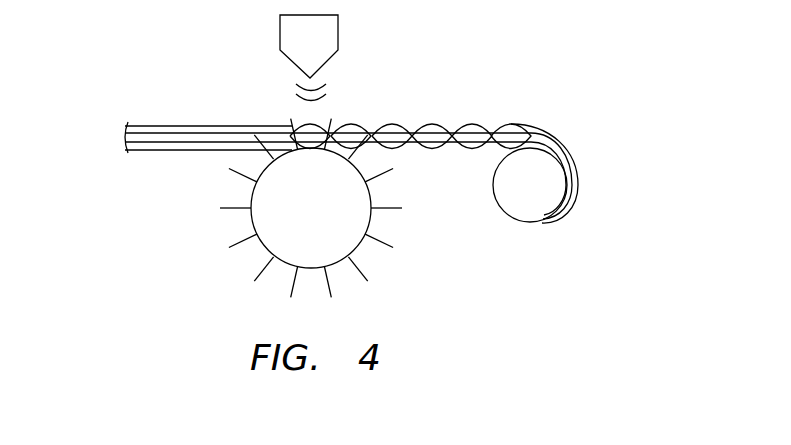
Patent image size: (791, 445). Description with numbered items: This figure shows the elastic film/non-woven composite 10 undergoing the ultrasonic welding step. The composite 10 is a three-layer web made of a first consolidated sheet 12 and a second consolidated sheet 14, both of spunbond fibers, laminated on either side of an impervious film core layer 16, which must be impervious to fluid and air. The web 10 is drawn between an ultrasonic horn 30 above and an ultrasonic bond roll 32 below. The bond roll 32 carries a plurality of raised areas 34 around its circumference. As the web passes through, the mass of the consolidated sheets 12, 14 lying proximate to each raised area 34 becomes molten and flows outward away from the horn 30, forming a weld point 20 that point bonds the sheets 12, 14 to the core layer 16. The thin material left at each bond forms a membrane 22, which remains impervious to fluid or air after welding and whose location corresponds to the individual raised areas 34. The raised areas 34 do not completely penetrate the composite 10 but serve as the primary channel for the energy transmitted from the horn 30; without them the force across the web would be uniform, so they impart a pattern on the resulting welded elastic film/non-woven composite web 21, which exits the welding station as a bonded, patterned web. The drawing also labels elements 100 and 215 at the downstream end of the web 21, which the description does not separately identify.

The elastic film/non-woven composite 10 is at (293, 117).
The first consolidated sheet 12 is at (147, 130).
The second consolidated sheet 14 is at (165, 148).
The impervious film core layer 16 is at (140, 142).
The weld points 20 is at (419, 104).
The welded elastic film/non-woven composite web 21 is at (433, 91).
The membrane 22 is at (322, 126).
The ultrasonic horn 30 is at (323, 51).
The ultrasonic bond roll 32 is at (346, 208).
The raised areas 34 is at (393, 210).
The wound roll of laminate 100 is at (572, 165).
The roll core 215 is at (547, 207).